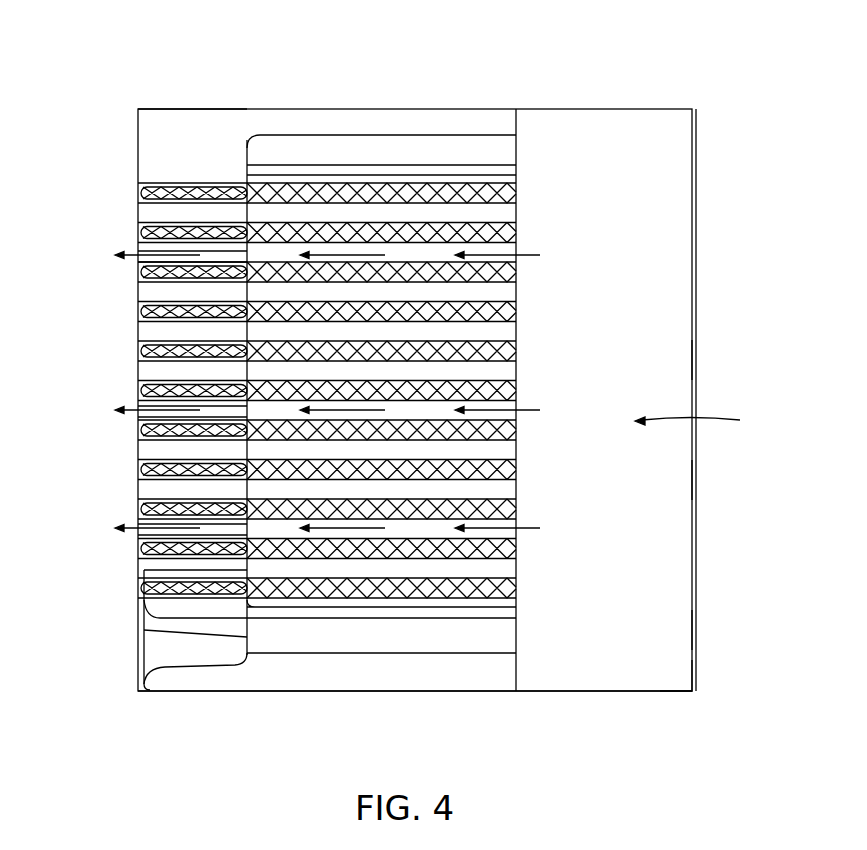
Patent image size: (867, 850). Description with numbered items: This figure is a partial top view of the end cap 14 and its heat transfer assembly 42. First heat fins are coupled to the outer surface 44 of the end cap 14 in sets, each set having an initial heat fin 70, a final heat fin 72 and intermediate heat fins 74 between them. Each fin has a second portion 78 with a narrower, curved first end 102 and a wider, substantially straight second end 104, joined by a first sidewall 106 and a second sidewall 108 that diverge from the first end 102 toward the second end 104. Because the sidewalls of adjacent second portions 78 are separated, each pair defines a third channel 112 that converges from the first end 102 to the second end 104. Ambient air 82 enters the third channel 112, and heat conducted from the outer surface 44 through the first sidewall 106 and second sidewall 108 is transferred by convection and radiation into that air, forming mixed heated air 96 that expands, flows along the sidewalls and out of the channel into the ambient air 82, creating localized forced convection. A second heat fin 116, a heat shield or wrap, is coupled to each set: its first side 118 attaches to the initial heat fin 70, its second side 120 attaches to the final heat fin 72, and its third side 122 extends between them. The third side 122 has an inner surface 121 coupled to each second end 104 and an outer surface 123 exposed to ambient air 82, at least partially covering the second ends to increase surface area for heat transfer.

The end cap 14 is at (176, 80).
The heat transfer assembly 42 is at (505, 190).
The outer surface 44 is at (172, 144).
The initial heat fin 70 is at (400, 122).
The final heat fin 72 is at (440, 683).
The intermediate heat fins 74 is at (428, 515).
The second portion 78 is at (263, 233).
The ambient air 82 is at (102, 638).
The mixed heated air 96 is at (128, 248).
The first end 102 is at (142, 512).
The second end 104 is at (510, 516).
The first sidewall 106 is at (428, 264).
The second sidewall 108 is at (410, 245).
The third channel 112 is at (292, 251).
The second heat fin 116 is at (710, 423).
The first side 118 is at (672, 108).
The second side 120 is at (655, 690).
The inner surface 121 is at (640, 467).
The third side 122 is at (655, 370).
The outer surface 123 is at (655, 628).